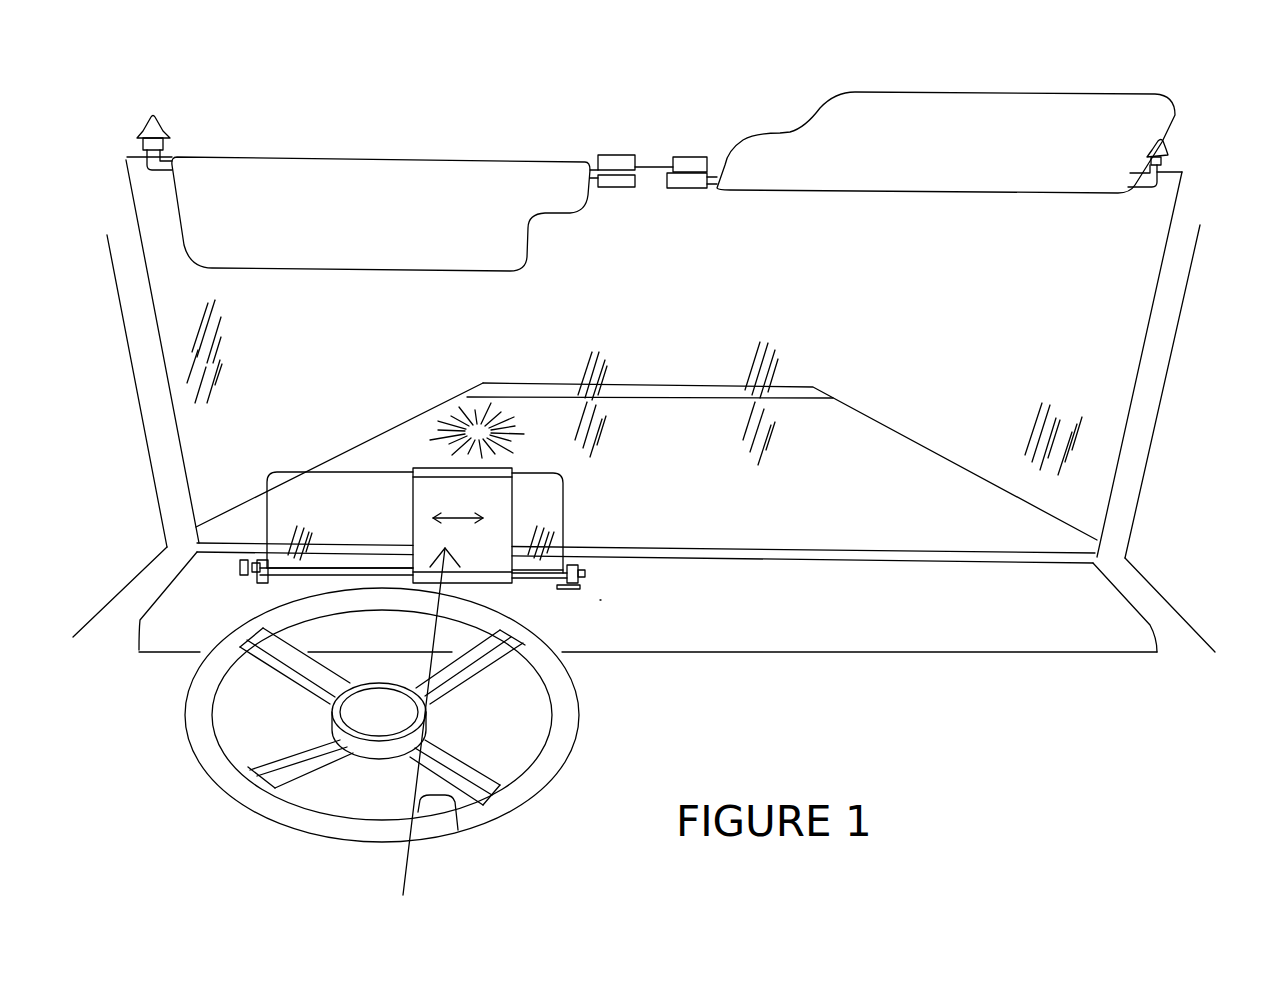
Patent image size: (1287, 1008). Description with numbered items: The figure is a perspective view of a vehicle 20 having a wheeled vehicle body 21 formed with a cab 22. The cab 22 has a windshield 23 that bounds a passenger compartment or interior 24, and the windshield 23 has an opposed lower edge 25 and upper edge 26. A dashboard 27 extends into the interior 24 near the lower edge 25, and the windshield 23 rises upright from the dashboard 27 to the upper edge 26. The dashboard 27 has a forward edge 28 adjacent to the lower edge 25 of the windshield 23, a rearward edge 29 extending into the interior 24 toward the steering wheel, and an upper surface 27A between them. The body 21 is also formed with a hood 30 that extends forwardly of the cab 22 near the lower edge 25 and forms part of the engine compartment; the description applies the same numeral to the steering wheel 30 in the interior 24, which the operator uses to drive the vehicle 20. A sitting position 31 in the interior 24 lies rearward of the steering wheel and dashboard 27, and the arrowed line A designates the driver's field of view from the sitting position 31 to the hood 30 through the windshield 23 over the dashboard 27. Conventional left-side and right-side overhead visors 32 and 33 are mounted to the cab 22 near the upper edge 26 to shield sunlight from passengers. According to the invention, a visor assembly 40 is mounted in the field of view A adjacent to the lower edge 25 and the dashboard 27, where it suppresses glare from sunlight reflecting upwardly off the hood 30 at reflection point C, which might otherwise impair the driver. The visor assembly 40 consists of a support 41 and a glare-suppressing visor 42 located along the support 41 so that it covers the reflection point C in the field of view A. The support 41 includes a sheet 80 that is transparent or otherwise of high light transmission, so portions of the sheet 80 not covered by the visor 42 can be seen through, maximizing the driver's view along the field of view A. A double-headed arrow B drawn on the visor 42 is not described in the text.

The vehicle 20 is at (1147, 577).
The wheeled vehicle body 21 is at (1187, 620).
The cab 22 is at (1158, 353).
The windshield 23 is at (772, 372).
The interior 24 is at (980, 708).
The lower edge 25 is at (815, 557).
The upper edge 26 is at (655, 167).
The dashboard 27 is at (913, 585).
The upper surface 27A is at (730, 597).
The forward edge 28 is at (685, 558).
The rearward edge 29 is at (1062, 653).
The hood 30 is at (852, 427).
The sitting position 31 is at (360, 888).
The left-side overhead visor 32 is at (422, 195).
The right-side overhead visor 33 is at (970, 128).
The visor assembly 40 is at (583, 493).
The support 41 is at (268, 510).
The glare-suppressing visor 42 is at (487, 543).
The sheet 80 is at (357, 498).
The field of view A is at (457, 827).
The lateral direction B is at (463, 513).
The reflection point C is at (497, 415).